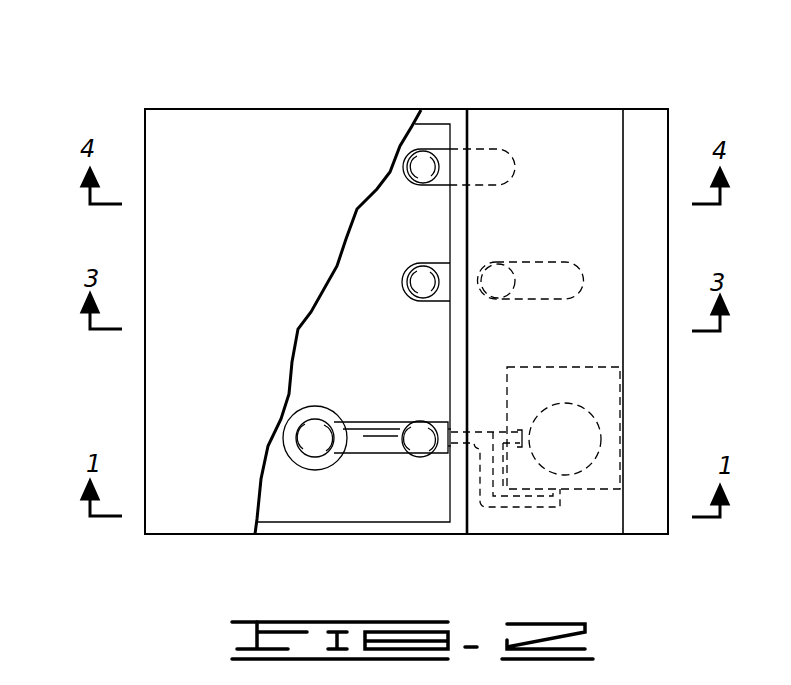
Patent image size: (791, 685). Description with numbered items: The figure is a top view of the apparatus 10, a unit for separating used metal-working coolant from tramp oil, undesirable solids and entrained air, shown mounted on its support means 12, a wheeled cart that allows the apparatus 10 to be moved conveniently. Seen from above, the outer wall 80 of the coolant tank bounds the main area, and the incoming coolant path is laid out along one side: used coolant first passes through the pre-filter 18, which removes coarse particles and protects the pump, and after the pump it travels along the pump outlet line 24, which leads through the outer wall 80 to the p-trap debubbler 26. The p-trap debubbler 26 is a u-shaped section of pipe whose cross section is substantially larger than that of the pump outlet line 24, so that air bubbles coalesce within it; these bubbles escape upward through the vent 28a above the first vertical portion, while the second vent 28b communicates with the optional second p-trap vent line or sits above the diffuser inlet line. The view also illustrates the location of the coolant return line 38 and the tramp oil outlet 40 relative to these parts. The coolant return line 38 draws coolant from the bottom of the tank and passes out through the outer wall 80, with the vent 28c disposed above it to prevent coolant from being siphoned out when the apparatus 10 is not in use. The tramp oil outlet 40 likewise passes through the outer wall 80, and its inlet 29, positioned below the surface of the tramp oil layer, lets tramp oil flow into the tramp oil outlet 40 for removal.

The outer wall 80 is at (157, 108).
The apparatus 10 is at (268, 120).
The support means 12 is at (640, 125).
The vent 28a is at (417, 450).
The second vent 28b is at (303, 442).
The vent 28c is at (407, 283).
The inlet 29 is at (427, 158).
The tramp oil outlet 40 is at (490, 162).
The coolant return line 38 is at (500, 273).
The pre-filter 18 is at (578, 418).
The p-trap debubbler 26 is at (368, 447).
The pump outlet line 24 is at (508, 502).